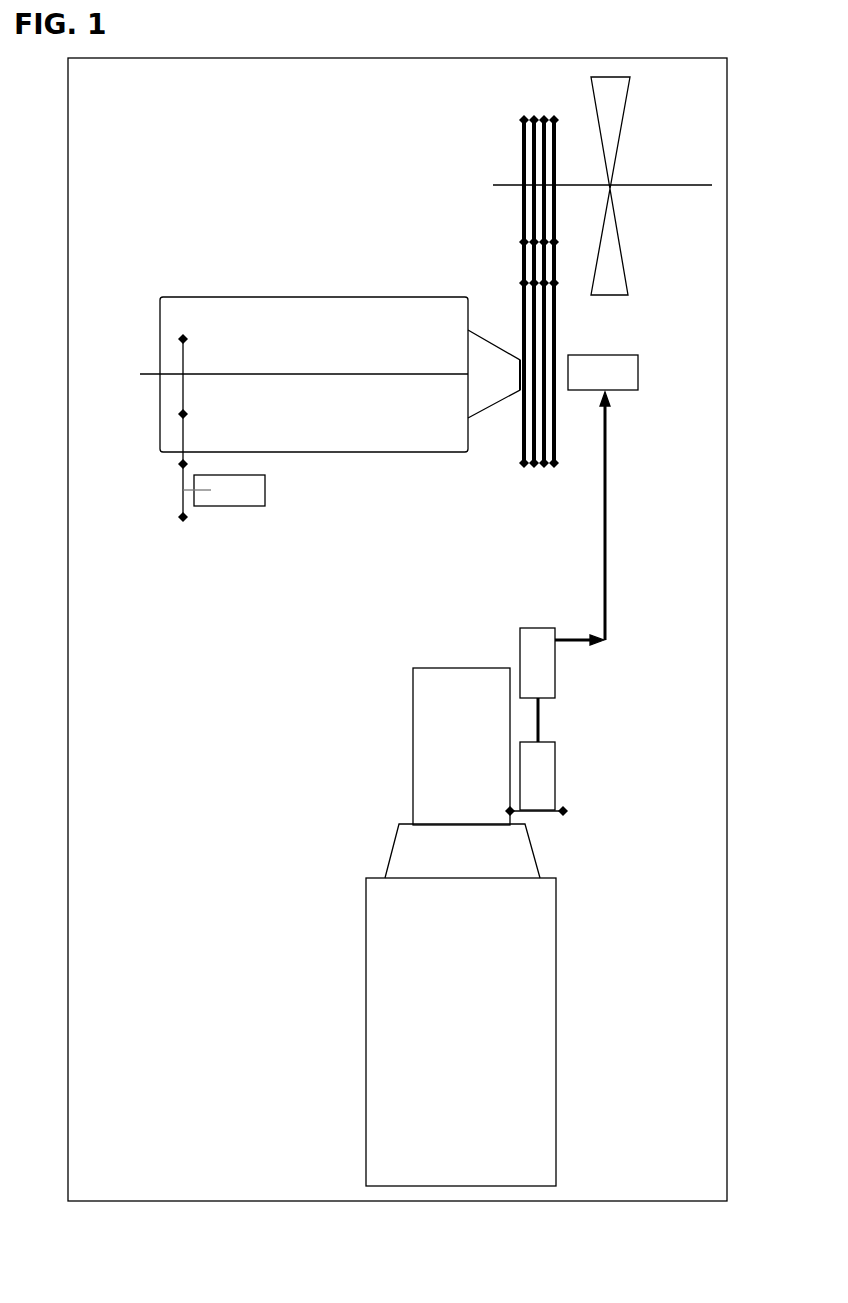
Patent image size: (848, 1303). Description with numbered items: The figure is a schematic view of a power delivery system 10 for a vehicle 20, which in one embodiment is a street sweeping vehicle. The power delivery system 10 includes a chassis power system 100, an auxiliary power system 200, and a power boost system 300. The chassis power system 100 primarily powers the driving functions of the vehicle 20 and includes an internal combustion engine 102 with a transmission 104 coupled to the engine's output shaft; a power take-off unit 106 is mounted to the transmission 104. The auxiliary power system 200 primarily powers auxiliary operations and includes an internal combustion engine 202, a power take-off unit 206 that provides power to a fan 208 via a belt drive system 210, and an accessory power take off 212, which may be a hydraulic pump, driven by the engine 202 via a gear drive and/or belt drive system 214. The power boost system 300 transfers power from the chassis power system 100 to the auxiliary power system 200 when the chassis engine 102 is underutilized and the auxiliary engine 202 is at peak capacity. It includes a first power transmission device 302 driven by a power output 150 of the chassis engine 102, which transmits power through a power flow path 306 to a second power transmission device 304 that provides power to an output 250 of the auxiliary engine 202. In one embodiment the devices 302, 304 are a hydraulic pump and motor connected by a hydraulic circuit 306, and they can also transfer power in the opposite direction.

The power delivery system 10 is at (218, 142).
The vehicle 20 is at (728, 258).
The chassis power system 100 is at (319, 899).
The internal combustion engine 102 is at (556, 965).
The transmission 104 is at (413, 690).
The power take-off unit 106 is at (555, 763).
The power output 150 is at (540, 740).
The auxiliary power system 200 is at (325, 256).
The internal combustion engine 202 is at (228, 296).
The power take-off unit 206 is at (497, 338).
The fan 208 is at (620, 282).
The belt drive system 210 is at (520, 157).
The accessory power take off 212 is at (227, 508).
The gear drive and/or belt drive system 214 is at (182, 437).
The output 250 is at (520, 358).
The power boost system 300 is at (638, 596).
The first power transmission device 302 is at (535, 627).
The second power transmission device 304 is at (638, 378).
The power flow path 306 is at (607, 512).